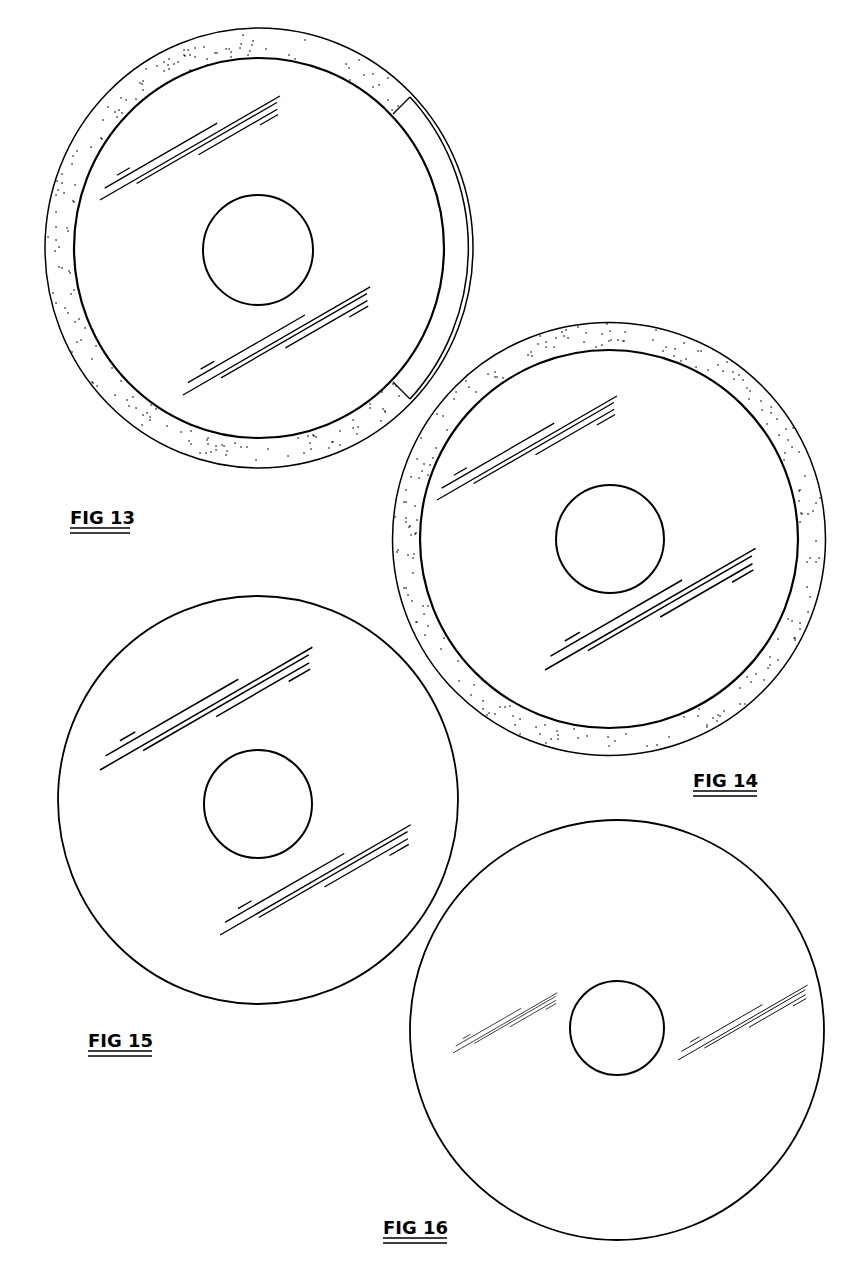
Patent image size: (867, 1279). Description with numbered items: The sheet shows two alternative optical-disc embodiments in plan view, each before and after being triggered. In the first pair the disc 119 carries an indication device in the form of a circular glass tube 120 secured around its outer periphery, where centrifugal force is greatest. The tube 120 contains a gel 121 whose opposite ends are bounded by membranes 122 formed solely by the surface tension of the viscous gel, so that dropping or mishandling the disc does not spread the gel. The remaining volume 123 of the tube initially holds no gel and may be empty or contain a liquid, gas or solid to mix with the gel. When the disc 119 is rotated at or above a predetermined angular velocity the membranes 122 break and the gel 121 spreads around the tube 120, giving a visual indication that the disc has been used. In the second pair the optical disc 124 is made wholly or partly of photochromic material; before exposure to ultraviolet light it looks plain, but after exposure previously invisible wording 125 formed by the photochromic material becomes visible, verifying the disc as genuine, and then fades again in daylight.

In FIG. 13, the disc 119 is at (400, 192).
In FIG. 14, the disc 119 is at (735, 455).
In FIG. 13, the circular glass tube 120 is at (366, 445).
In FIG. 14, the circular glass tube 120 is at (722, 352).
In FIG. 13, the gel 121 is at (170, 440).
In FIG. 14, the gel 121 is at (598, 330).
In FIG. 13, the membranes 122 is at (405, 104).
In FIG. 13, the volume 123 is at (460, 196).
In FIG. 15, the optical disc 124 is at (247, 640).
In FIG. 16, the optical disc 124 is at (448, 1064).
In FIG. 16, the wording 125 is at (727, 900).